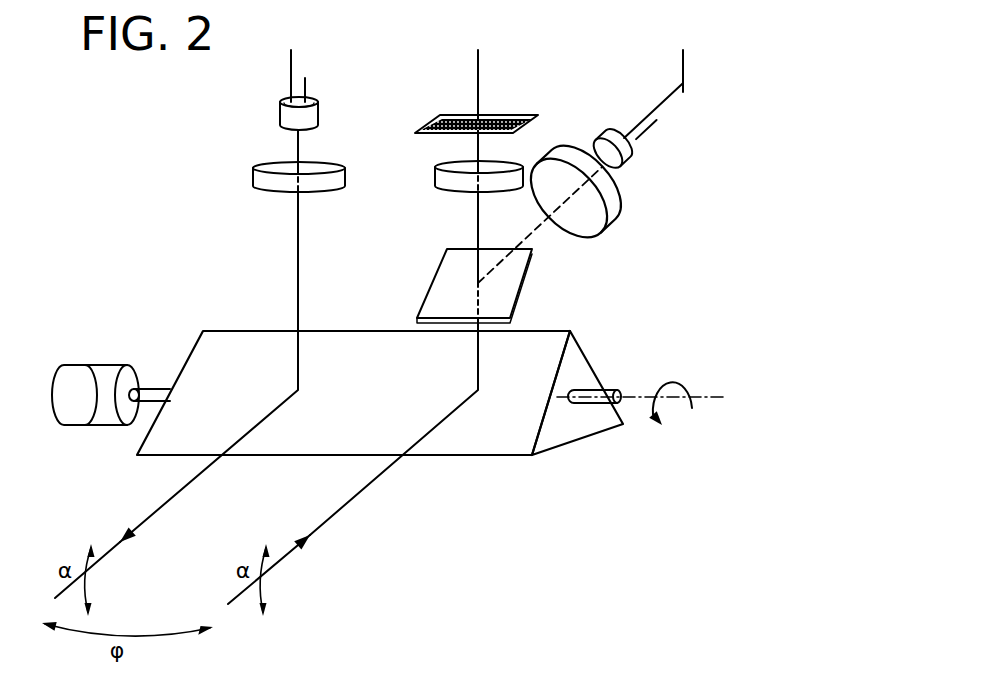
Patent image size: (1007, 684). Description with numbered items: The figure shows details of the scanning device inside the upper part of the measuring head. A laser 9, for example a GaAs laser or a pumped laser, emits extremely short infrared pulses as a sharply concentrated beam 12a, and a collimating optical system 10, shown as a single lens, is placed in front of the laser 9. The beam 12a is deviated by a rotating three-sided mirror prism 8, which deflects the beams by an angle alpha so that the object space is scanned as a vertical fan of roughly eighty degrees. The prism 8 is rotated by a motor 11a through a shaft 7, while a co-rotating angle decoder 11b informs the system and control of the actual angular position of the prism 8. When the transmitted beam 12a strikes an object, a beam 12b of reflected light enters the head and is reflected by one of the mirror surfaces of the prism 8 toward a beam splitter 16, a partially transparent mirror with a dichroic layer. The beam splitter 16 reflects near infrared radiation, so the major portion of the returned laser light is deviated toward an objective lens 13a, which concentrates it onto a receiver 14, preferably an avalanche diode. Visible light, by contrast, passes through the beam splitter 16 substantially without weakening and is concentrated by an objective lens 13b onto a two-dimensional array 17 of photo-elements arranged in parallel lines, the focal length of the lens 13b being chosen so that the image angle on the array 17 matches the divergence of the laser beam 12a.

The drive shaft 7 is at (155, 392).
The mirror prism 8 is at (573, 425).
The laser 9 is at (282, 118).
The collimating optical system 10 is at (258, 178).
The motor 11a is at (105, 415).
The angle decoder 11b is at (80, 375).
The transmitted laser beam 12a is at (173, 498).
The reflected beam 12b is at (357, 498).
The objective lens 13a is at (587, 227).
The objective lens 13b is at (437, 179).
The receiver 14 is at (635, 158).
The beam splitter 16 is at (370, 275).
The array of photo-elements 17 is at (438, 118).